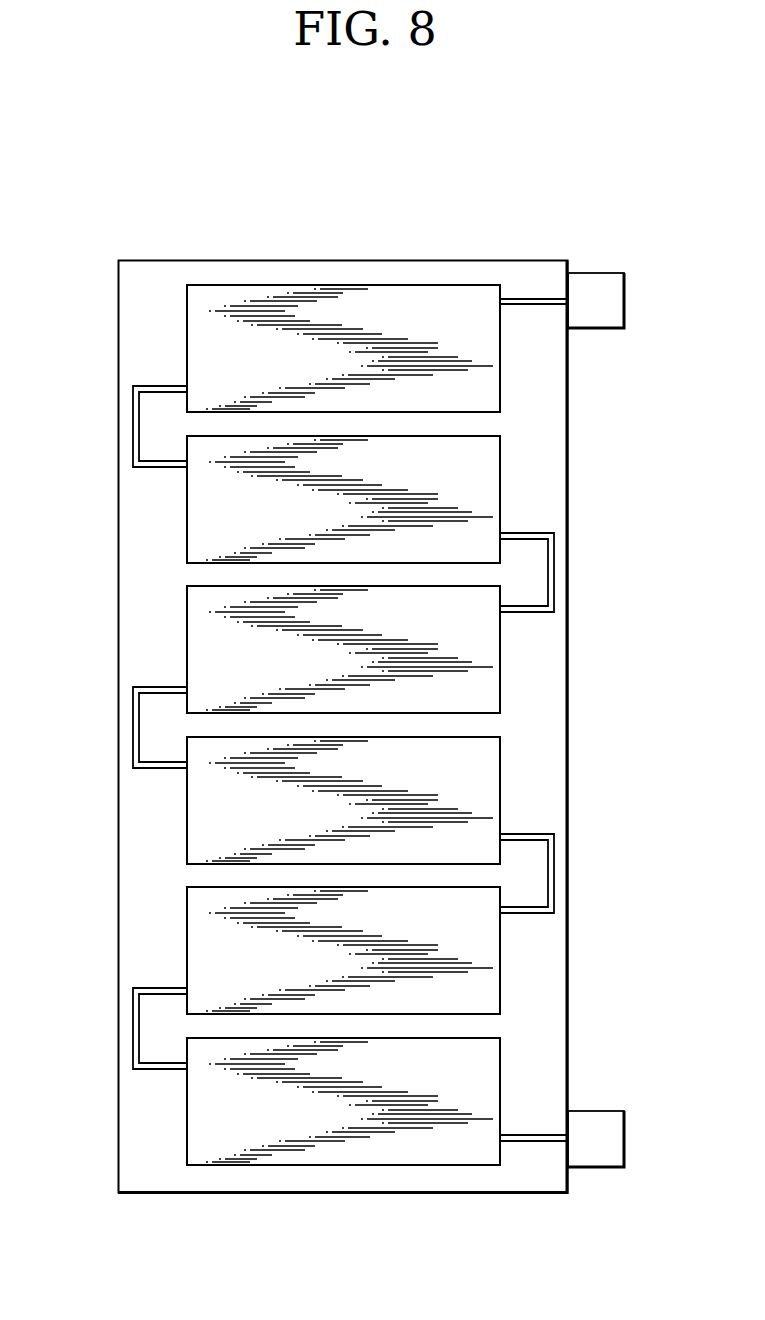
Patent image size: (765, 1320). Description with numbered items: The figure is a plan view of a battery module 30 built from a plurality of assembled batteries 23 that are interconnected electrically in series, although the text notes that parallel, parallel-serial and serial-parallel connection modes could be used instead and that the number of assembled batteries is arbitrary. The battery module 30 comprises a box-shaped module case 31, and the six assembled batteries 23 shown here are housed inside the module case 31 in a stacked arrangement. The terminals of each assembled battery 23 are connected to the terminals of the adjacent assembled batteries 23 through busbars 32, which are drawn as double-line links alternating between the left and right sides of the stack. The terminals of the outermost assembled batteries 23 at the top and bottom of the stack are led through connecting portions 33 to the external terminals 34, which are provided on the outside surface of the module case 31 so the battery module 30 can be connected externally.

The assembled battery 23 is at (352, 298).
The battery module 30 is at (574, 180).
The module case 31 is at (118, 312).
The busbar 32 is at (132, 420).
The terminal lead 33 is at (527, 297).
The external terminal 34 is at (597, 273).